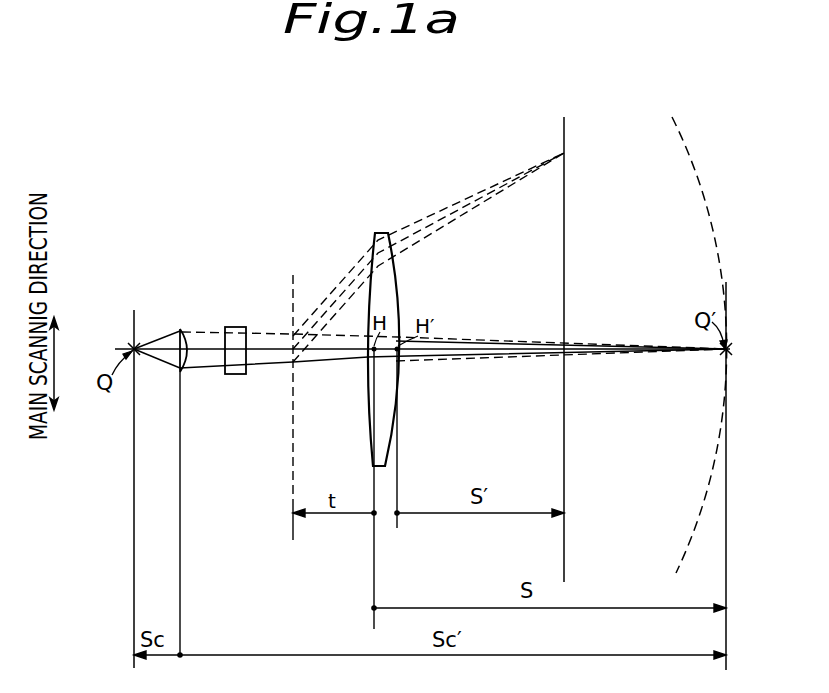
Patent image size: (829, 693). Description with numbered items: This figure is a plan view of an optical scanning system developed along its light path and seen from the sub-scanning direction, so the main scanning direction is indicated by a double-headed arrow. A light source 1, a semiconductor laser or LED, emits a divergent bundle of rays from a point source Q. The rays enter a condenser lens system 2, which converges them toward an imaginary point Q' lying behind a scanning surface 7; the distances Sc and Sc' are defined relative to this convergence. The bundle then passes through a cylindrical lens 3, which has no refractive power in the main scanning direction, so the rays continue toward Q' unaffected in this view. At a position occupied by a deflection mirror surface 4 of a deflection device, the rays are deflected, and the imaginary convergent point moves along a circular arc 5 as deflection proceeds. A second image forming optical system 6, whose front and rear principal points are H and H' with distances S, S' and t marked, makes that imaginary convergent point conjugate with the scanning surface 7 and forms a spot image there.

The light source 1 is at (134, 324).
The condenser lens system 2 is at (181, 329).
The cylindrical lens 3 is at (242, 327).
The deflection mirror surface 4 is at (293, 283).
The circular arc 5 is at (683, 136).
The second image forming optical system 6 is at (388, 233).
The scanning surface 7 is at (566, 136).